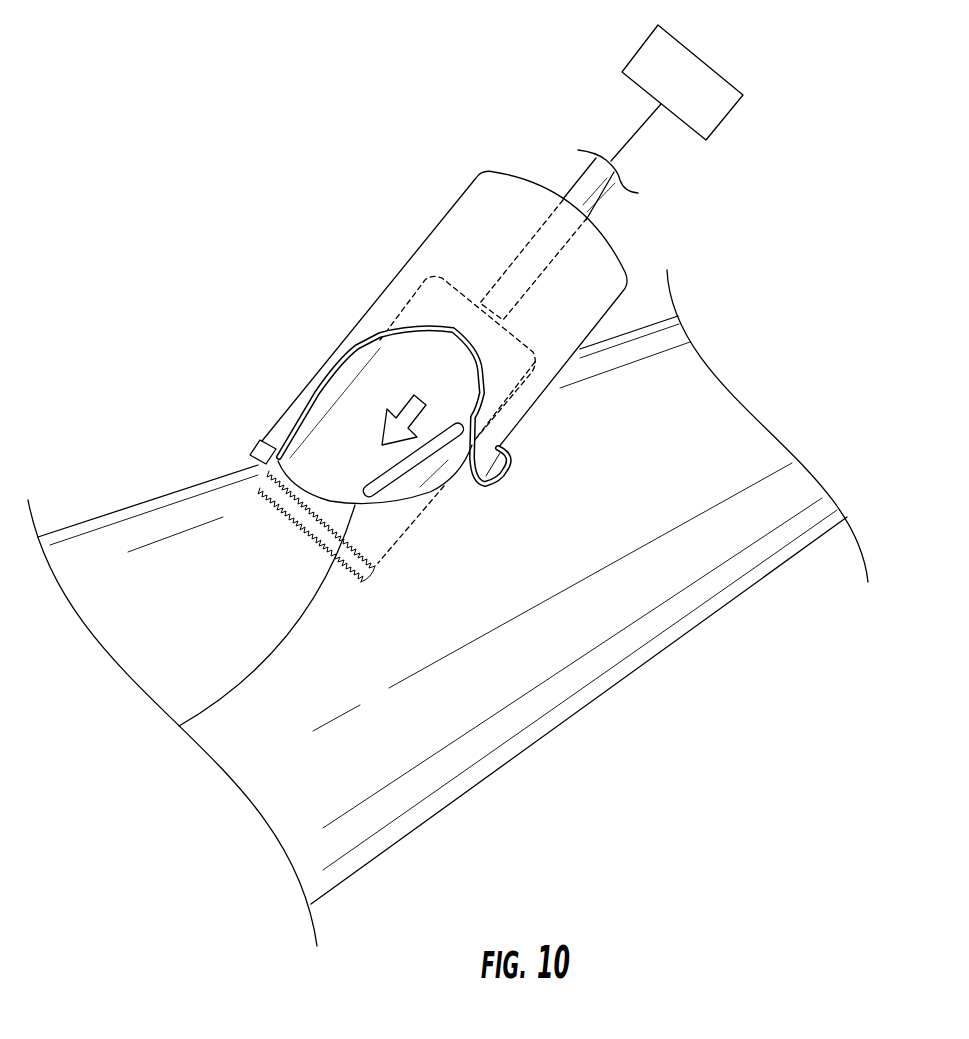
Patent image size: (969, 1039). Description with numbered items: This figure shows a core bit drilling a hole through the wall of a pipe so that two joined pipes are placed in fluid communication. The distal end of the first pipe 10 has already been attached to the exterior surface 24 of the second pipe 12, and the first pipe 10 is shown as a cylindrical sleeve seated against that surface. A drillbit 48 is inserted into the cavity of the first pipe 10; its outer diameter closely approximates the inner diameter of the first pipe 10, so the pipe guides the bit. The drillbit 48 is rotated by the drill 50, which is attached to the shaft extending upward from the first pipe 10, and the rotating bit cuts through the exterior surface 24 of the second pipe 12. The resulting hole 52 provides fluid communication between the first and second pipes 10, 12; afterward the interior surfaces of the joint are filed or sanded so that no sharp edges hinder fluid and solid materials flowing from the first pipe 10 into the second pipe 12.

The first pipe 10 is at (419, 229).
The second pipe 12 is at (131, 492).
The exterior surface 24 is at (474, 567).
The drillbit 48 is at (342, 423).
The drill 50 is at (631, 62).
The hole 52 is at (181, 729).